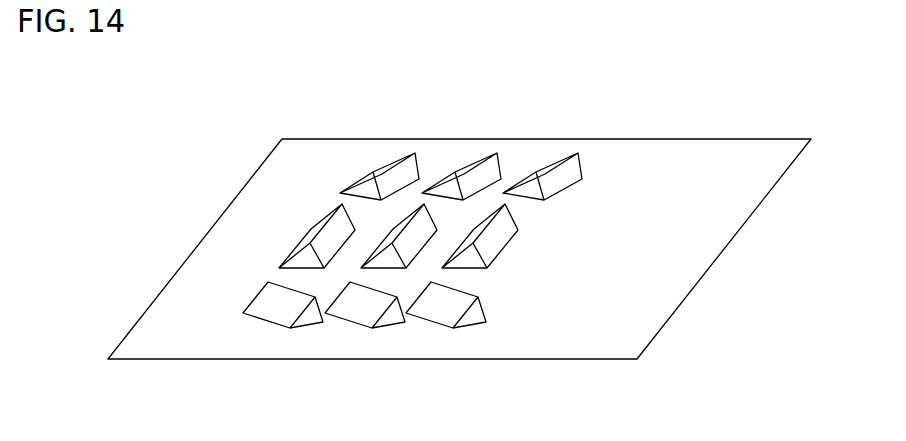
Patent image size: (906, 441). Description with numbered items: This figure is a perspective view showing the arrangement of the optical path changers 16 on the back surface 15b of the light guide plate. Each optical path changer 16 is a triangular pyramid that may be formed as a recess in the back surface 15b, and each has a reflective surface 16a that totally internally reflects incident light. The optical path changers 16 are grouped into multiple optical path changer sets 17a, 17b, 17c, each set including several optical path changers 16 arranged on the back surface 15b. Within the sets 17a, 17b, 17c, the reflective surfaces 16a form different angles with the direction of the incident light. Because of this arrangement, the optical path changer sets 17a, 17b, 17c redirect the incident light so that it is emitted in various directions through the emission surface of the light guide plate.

The back surface 15b is at (662, 170).
The optical path changer 16 is at (315, 300).
The reflective surface 16a is at (273, 308).
The optical path changer set 17a is at (285, 348).
The optical path changer set 17b is at (357, 387).
The optical path changer set 17c is at (439, 387).